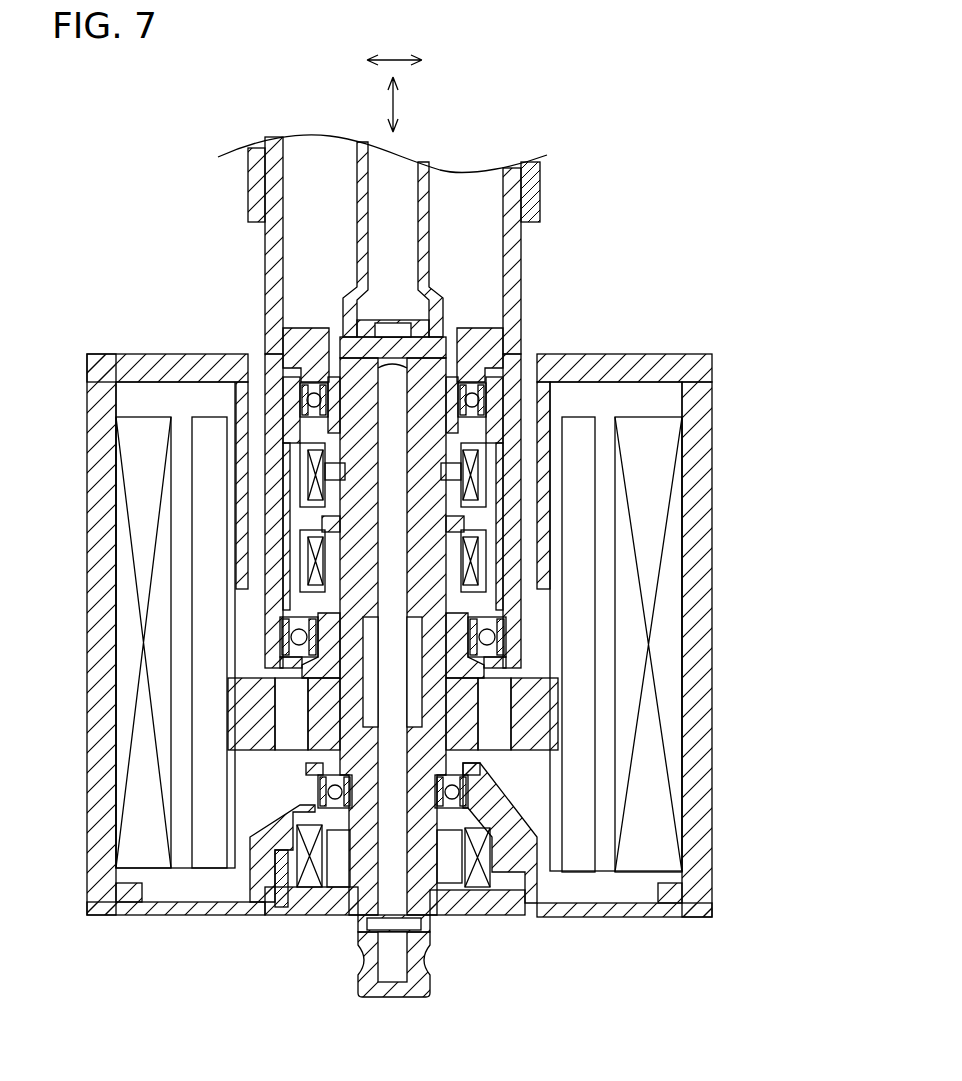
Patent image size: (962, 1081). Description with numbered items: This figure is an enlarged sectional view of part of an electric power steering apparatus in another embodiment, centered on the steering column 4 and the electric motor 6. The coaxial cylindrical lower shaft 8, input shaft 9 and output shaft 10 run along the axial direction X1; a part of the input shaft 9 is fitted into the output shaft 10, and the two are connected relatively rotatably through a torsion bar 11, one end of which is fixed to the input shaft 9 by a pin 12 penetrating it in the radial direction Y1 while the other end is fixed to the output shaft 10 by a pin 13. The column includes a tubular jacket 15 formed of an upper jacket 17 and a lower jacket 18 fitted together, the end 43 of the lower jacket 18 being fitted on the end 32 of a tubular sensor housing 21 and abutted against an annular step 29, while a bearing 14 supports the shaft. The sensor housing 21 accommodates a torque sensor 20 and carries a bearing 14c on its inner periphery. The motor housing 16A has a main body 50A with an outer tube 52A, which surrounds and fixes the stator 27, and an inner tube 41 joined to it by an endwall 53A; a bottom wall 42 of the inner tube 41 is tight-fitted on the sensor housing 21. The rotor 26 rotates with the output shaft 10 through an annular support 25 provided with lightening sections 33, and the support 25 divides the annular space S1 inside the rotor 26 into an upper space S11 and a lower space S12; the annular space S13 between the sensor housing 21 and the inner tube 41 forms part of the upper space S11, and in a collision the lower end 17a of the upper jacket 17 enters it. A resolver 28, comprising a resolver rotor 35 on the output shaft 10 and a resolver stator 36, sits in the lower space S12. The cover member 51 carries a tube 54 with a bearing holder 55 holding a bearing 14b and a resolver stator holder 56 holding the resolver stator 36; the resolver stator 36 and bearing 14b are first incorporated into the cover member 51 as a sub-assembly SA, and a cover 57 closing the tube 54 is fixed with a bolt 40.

The steering column 4 is at (687, 303).
The electric motor 6 is at (733, 558).
The lower shaft 8 is at (355, 165).
The input shaft 9 is at (342, 390).
The output shaft 10 is at (357, 988).
The torsion bar 11 is at (395, 460).
The pin 12 is at (380, 343).
The pin 13 is at (388, 930).
The bearing 14 is at (480, 402).
The bearing 14b is at (335, 792).
The bearing 14c is at (298, 637).
The jacket 15 is at (606, 163).
The motor housing 16A is at (639, 342).
The upper jacket 17 is at (538, 178).
The lower end 17a is at (265, 186).
The lower jacket 18 is at (518, 238).
The torque sensor 20 is at (288, 543).
The sensor housing 21 is at (270, 488).
The support 25 is at (240, 710).
The rotor 26 is at (205, 422).
The stator 27 is at (120, 430).
The resolver 28 is at (528, 968).
The annular step 29 is at (278, 352).
The end 32 is at (300, 330).
The lightening section 33 is at (290, 733).
The resolver rotor 35 is at (447, 872).
The resolver stator 36 is at (480, 880).
The bolt 40 is at (283, 910).
The inner tube 41 is at (455, 452).
The bottom wall 42 is at (488, 585).
The end 43 is at (515, 336).
The main body 50A is at (776, 313).
The cover member 51 is at (693, 931).
The outer tube 52A is at (695, 420).
The endwall 53A is at (647, 362).
The tube 54 is at (241, 886).
The bearing holder 55 is at (470, 790).
The resolver stator holder 56 is at (512, 850).
The cover 57 is at (333, 908).
The annular space S1 is at (781, 605).
The upper space S11 is at (540, 620).
The lower space S12 is at (510, 650).
The annular space S13 is at (520, 540).
The sub-assembly SA is at (137, 955).
The axial direction X1 is at (395, 100).
The radial direction Y1 is at (397, 58).